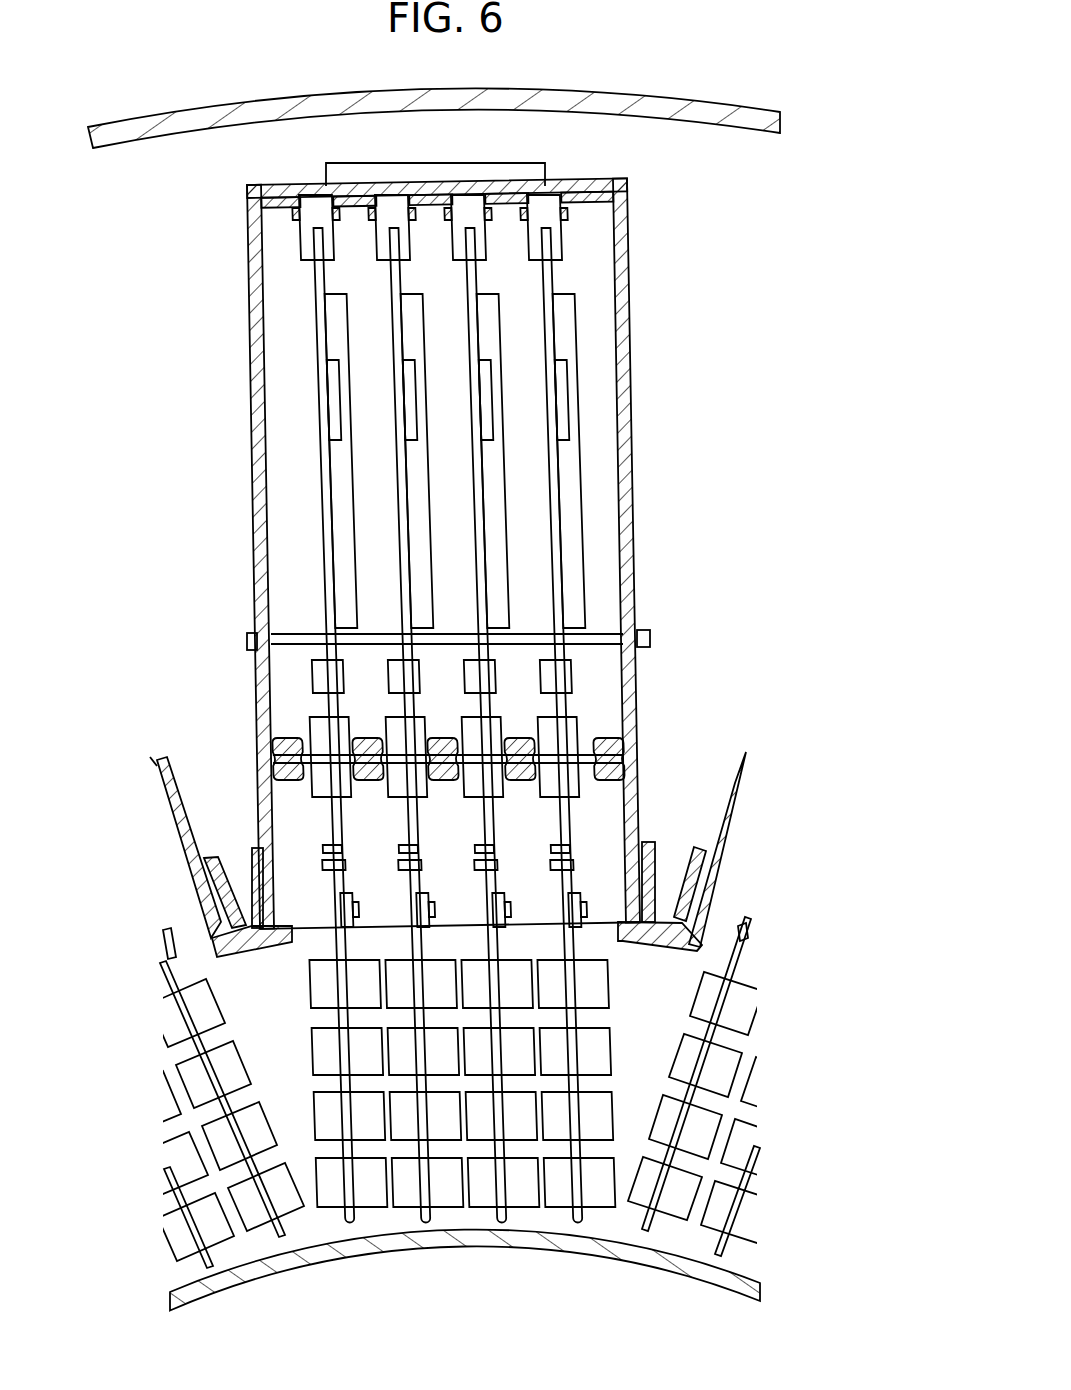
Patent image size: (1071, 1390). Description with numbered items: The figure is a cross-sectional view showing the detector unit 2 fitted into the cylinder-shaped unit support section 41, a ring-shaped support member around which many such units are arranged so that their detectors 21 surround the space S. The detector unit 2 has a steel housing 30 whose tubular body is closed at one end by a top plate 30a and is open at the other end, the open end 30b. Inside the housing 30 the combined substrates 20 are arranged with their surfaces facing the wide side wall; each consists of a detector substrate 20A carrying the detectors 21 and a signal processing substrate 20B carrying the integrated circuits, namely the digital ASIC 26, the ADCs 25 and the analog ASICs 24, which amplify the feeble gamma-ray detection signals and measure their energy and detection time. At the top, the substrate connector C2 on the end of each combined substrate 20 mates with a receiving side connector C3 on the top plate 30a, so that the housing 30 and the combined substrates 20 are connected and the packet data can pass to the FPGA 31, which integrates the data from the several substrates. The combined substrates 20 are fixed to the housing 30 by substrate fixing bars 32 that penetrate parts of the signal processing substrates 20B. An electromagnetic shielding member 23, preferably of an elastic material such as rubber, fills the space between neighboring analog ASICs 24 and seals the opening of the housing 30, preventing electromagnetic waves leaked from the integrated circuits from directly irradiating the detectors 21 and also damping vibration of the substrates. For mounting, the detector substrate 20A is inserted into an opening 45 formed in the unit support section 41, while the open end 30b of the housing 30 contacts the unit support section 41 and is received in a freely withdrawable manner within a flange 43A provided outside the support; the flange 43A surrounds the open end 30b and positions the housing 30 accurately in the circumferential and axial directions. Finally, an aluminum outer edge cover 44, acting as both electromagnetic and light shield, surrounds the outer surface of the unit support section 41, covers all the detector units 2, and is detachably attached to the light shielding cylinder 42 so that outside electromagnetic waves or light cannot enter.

The detector unit 2 is at (277, 183).
The outer edge cover 44 is at (596, 100).
The FPGA 31 is at (444, 165).
The receiving side connector C3 is at (537, 196).
The top plate 30a is at (590, 186).
The substrate connector C2 is at (562, 236).
The housing 30 is at (476, 526).
The combined substrate 20 is at (459, 769).
The digital ASIC 26 is at (570, 497).
The signal processing substrate 20B is at (322, 507).
The substrate fixing bar 32 is at (638, 634).
The ADC 25 is at (565, 673).
The analog ASIC 24 is at (565, 723).
The electromagnetic shielding member 23 is at (610, 752).
The detector substrate 20A is at (338, 940).
The unit support section 41 is at (246, 925).
The flange 43A is at (656, 857).
The opening 45 is at (300, 943).
The open end 30b is at (640, 941).
The detector 21 is at (522, 1117).
The light shielding cylinder 42 is at (525, 1240).
The space S is at (462, 1129).